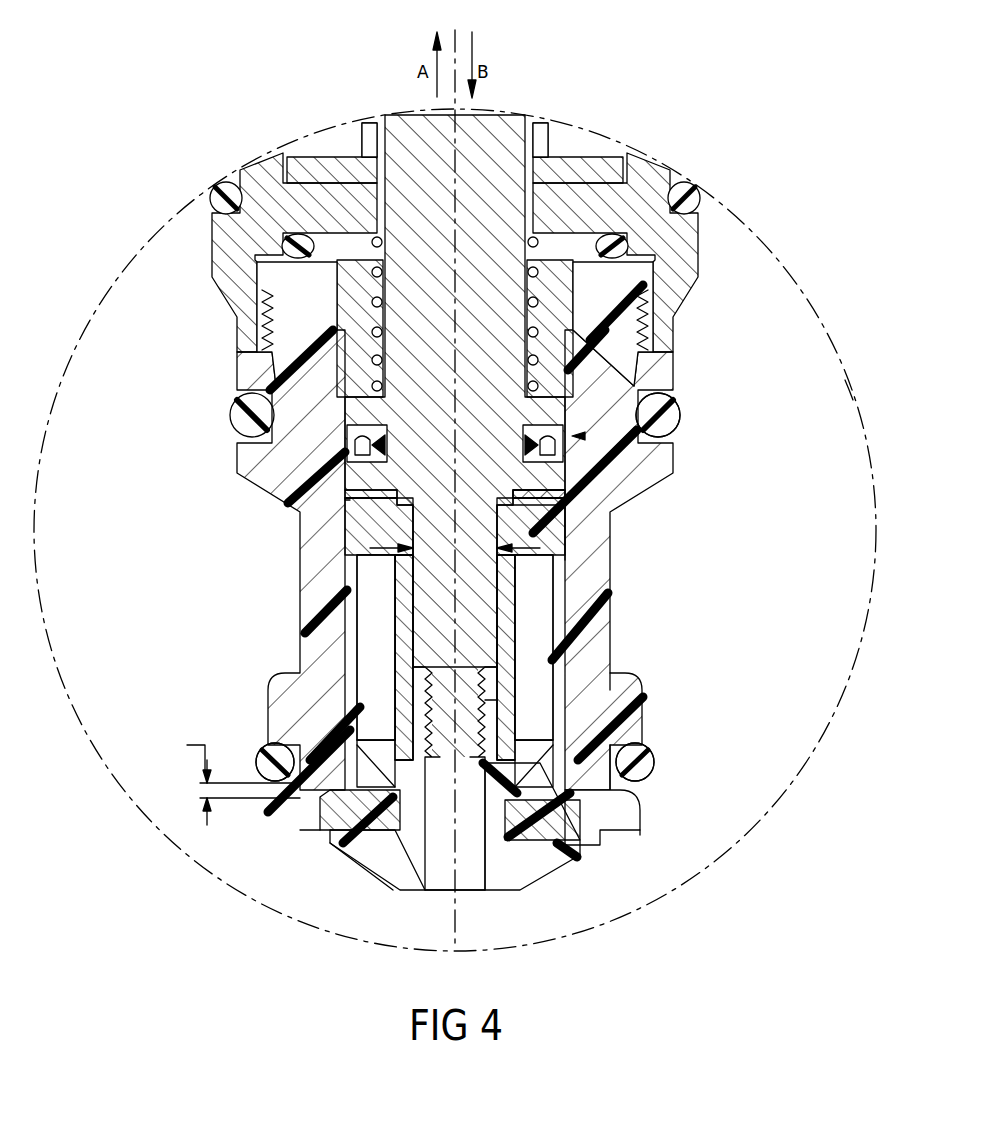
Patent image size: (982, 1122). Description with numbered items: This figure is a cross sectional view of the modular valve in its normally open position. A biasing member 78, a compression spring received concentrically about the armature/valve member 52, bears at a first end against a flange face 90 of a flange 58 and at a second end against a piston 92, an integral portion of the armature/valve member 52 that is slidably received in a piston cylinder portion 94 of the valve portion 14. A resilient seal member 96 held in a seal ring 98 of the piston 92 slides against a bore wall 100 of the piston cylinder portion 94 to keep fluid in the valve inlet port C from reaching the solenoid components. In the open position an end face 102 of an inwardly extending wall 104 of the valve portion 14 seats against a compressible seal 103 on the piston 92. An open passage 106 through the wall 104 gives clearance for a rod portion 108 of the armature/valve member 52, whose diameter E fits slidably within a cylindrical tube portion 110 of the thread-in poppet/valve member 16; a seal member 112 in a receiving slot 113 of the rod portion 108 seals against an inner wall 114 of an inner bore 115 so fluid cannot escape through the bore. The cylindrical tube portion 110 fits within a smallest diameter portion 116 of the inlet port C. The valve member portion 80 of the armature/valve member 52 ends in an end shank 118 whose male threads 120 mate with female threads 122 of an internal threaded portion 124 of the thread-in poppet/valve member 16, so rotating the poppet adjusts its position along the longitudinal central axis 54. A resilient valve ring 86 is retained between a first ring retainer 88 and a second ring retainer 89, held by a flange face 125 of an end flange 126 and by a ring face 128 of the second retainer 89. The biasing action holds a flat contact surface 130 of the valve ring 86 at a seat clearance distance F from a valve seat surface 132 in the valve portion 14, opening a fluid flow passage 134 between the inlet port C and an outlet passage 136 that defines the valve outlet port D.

The armature/valve member 52 is at (490, 130).
The flange 58 is at (298, 205).
The biasing member 78 is at (345, 240).
The piston 92 is at (550, 383).
The piston cylinder portion 94 is at (573, 360).
The flange face 90 is at (265, 322).
The seal member 96 is at (355, 440).
The seal ring 98 is at (345, 470).
The valve member portion 80 is at (413, 468).
The open passage 106 is at (402, 518).
The cylindrical tube portion 110 is at (407, 582).
The receiving slot 113 is at (415, 610).
The valve inlet port C is at (363, 623).
The smallest diameter portion 116 is at (373, 687).
The internal threaded portion 124 is at (408, 722).
The second ring retainer 89 is at (387, 747).
The bore wall 100 is at (635, 445).
The compressible seal 103 is at (547, 500).
The end face 102 is at (530, 520).
The inwardly extending wall 104 is at (575, 565).
The rod portion 108 is at (500, 580).
The seal member 112 is at (520, 600).
The inner wall 114 is at (560, 640).
The inner bore 115 is at (520, 672).
The male threads 120 is at (510, 702).
The end shank 118 is at (605, 678).
The female threads 122 is at (530, 725).
The ring face 128 is at (580, 757).
The flat contact surface 130 is at (630, 750).
The valve ring 86 is at (560, 790).
The flange face 125 is at (573, 807).
The outlet passage 136 is at (593, 833).
The end flange 126 is at (542, 860).
The thread-in poppet/valve member 16 is at (633, 855).
The valve seat surface 132 is at (332, 832).
The fluid flow passage 134 is at (353, 786).
The first ring retainer 88 is at (378, 871).
The valve outlet port D is at (309, 841).
The longitudinal central axis 54 is at (453, 910).
The seat clearance distance F is at (237, 779).
The diameter E is at (477, 494).
The valve portion 14 is at (775, 430).